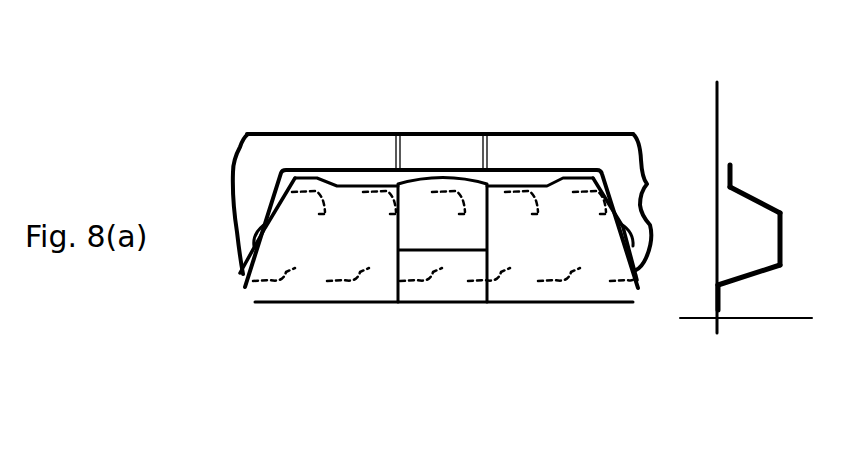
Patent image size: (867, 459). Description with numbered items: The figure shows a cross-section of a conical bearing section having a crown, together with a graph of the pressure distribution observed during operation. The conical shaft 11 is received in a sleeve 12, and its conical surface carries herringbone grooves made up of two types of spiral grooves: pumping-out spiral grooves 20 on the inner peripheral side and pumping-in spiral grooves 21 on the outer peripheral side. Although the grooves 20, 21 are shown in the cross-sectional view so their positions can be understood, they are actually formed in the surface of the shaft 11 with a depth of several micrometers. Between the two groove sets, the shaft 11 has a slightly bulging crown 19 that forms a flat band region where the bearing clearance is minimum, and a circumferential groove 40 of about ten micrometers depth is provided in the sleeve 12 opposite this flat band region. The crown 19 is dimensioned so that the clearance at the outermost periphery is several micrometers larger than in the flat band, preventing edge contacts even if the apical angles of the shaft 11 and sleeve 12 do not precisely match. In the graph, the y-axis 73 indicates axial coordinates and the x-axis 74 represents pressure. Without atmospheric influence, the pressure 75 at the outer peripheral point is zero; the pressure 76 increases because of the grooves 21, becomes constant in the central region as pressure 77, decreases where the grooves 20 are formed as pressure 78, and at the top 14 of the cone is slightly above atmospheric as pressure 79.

The conical shaft 11 is at (555, 238).
The sleeve 12 is at (255, 205).
The top of the cone 14 is at (495, 180).
The crown 19 is at (617, 232).
The pumping-out spiral grooves 20 is at (327, 202).
The pumping-in spiral grooves 21 is at (285, 280).
The circumferential groove 40 is at (250, 237).
The y-axis 73 is at (715, 108).
The x-axis 74 is at (807, 319).
The pressure at outer peripheral point 75 is at (717, 297).
The increasing pressure 76 is at (750, 278).
The constant pressure 77 is at (782, 238).
The decreasing pressure 78 is at (755, 195).
The pressure at top of cone 79 is at (732, 172).